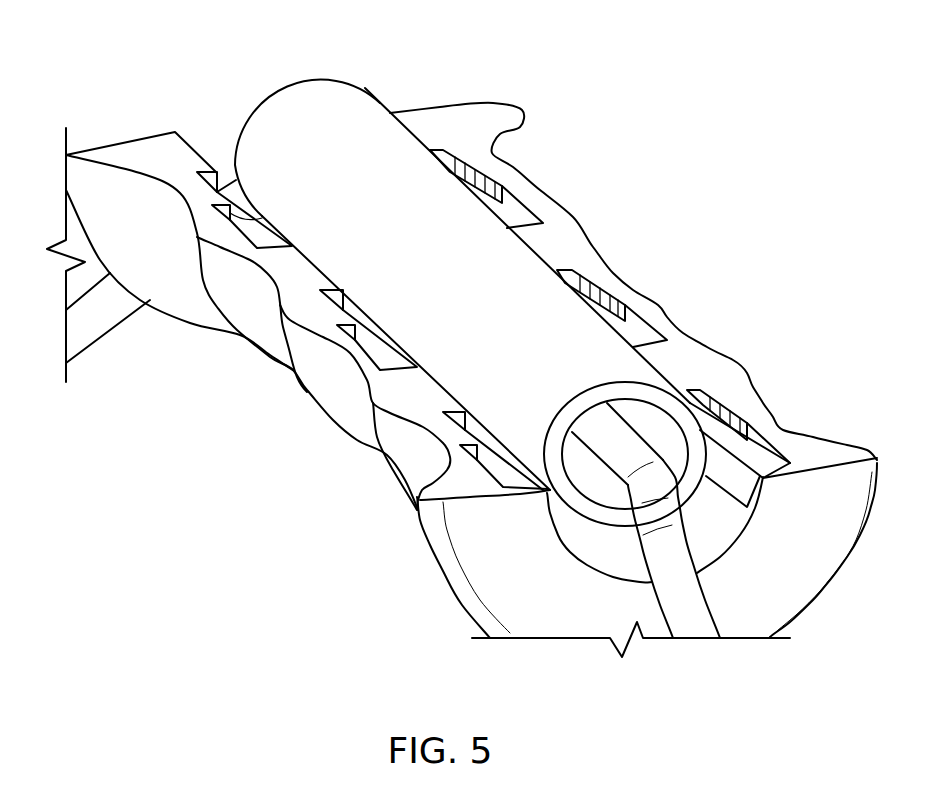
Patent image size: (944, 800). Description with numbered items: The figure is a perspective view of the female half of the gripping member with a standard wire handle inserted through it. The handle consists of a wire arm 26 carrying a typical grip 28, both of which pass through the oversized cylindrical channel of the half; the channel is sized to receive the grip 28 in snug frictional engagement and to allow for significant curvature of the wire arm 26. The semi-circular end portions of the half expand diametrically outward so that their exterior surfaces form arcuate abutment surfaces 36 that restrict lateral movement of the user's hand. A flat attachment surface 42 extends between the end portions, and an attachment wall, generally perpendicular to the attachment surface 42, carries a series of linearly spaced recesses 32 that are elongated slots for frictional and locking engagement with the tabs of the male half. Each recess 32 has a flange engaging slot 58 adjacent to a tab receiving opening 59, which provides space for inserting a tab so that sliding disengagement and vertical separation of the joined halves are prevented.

The wire arm 26 is at (630, 450).
The grip 28 is at (362, 113).
The recesses 32 is at (624, 322).
The arcuate abutment surfaces 36 is at (122, 232).
The attachment surface 42 is at (287, 280).
The flange engaging slot 58 is at (728, 425).
The tab receiving opening 59 is at (766, 446).